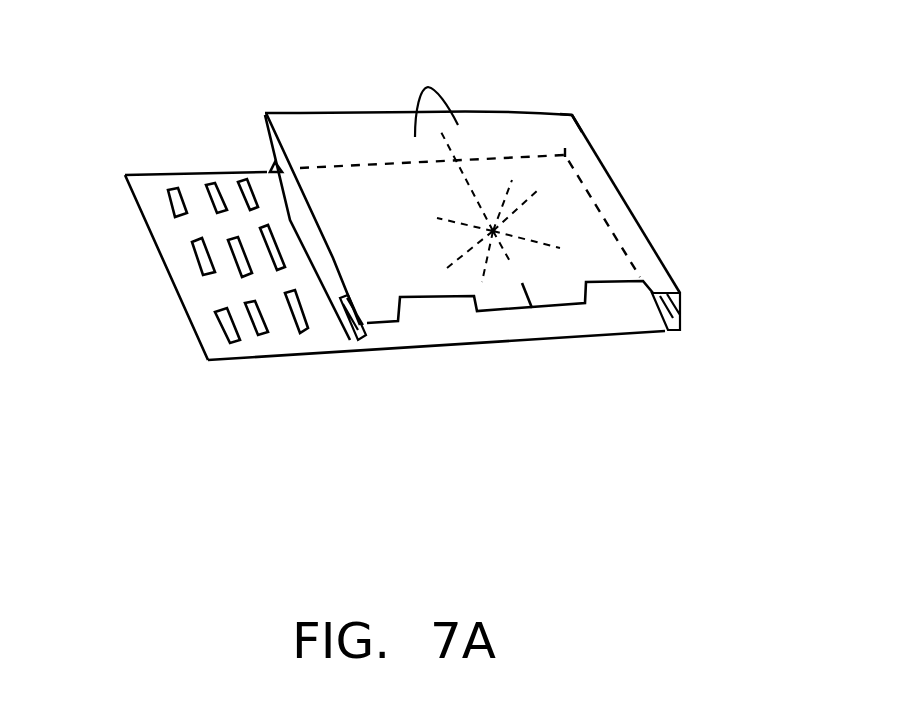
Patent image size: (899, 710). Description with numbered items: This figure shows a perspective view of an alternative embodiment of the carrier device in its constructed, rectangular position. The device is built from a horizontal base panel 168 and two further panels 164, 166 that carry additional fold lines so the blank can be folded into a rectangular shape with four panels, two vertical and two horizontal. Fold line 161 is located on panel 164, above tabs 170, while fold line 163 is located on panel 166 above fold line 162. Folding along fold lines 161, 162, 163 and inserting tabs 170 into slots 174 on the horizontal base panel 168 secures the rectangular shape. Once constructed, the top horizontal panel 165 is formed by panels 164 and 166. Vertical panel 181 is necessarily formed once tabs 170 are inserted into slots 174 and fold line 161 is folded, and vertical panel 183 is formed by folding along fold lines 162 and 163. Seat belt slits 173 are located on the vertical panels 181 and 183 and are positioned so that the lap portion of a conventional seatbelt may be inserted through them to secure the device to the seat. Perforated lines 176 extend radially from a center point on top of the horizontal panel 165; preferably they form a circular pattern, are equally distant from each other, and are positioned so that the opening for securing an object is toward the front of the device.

The fold line 161 is at (267, 115).
The fold line 162 is at (663, 333).
The fold line 163 is at (572, 117).
The panel 164 is at (363, 128).
The top horizontal panel 165 is at (433, 97).
The panel 166 is at (503, 120).
The horizontal base panel 168 is at (148, 178).
The tabs 170 is at (228, 170).
The seat belt slits 173 is at (343, 349).
The slots 174 is at (168, 203).
The perforated lines 176 is at (455, 265).
The vertical panel 181 is at (268, 165).
The vertical panel 183 is at (617, 203).